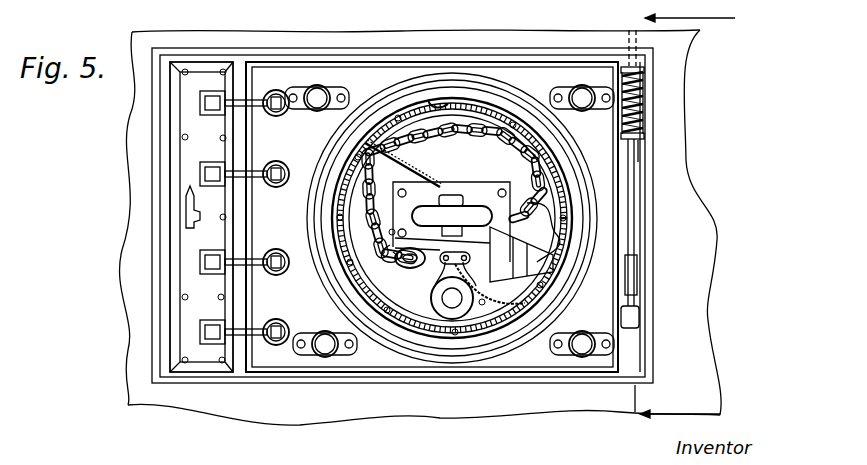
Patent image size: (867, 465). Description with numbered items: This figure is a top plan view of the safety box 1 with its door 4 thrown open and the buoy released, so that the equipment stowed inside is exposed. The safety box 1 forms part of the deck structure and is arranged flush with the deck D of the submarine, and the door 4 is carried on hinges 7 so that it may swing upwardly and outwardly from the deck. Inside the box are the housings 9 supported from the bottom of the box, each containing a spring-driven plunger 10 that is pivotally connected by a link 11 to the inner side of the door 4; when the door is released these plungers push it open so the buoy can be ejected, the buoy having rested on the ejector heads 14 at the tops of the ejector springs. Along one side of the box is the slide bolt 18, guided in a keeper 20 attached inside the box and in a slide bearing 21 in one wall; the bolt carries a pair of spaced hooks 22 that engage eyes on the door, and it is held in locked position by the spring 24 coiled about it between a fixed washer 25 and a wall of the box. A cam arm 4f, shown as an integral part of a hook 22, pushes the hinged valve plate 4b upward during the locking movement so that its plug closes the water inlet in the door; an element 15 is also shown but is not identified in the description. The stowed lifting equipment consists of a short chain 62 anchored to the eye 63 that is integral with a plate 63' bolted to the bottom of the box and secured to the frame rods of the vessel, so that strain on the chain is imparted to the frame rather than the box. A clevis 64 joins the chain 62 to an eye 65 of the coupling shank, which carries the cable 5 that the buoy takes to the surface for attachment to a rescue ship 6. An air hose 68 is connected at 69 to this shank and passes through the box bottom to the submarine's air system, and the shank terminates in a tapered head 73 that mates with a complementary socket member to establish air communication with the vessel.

The safety box 1 is at (327, 370).
The door 4 is at (167, 285).
The valve plate 4b is at (183, 212).
The cam arm 4f is at (700, 240).
The cable 5 is at (506, 356).
The rescue ship 6 is at (676, 218).
The hinges 7 is at (202, 8).
The housings 9 is at (276, 188).
The plunger 10 is at (280, 96).
The link 11 is at (243, 62).
The ejector head 14 is at (327, 358).
The bezel ring 15 is at (432, 105).
The slide bolt 18 is at (631, 216).
The keeper 20 is at (628, 320).
The slide bearing 21 is at (644, 70).
The hooks 22 is at (632, 278).
The spring 24 is at (638, 118).
The fixed washer 25 is at (644, 138).
The chain 62 is at (472, 133).
The eye 63 is at (452, 194).
The plate 63' is at (355, 162).
The clevis 64 is at (396, 266).
The eye of coupling shank 65 is at (400, 245).
The air hose 68 is at (436, 298).
The air hose connection 69 is at (507, 253).
The tapered head 73 is at (555, 280).
The deck D is at (142, 200).